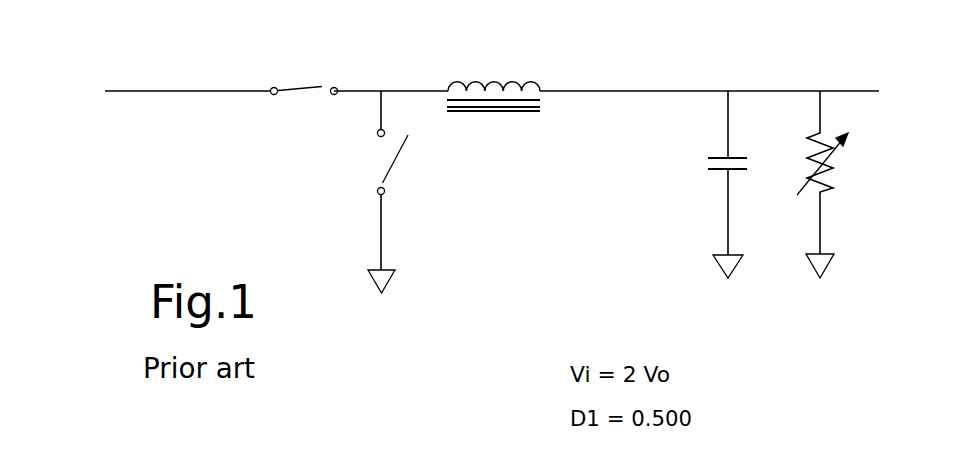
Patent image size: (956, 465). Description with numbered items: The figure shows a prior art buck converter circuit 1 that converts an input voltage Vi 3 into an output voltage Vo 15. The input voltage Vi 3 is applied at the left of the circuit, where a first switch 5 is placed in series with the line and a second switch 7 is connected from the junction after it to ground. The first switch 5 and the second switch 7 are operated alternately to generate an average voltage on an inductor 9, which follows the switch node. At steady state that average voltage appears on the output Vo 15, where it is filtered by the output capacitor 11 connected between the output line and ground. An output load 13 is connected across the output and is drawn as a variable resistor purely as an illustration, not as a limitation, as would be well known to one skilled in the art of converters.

The buck converter circuit 1 is at (137, 32).
The input voltage Vi 3 is at (100, 107).
The switch S1a 5 is at (316, 73).
The switch S1b 7 is at (372, 172).
The inductor L1 9 is at (502, 68).
The output capacitor C1 11 is at (692, 143).
The output load 13 is at (843, 180).
The output voltage Vo 15 is at (852, 82).